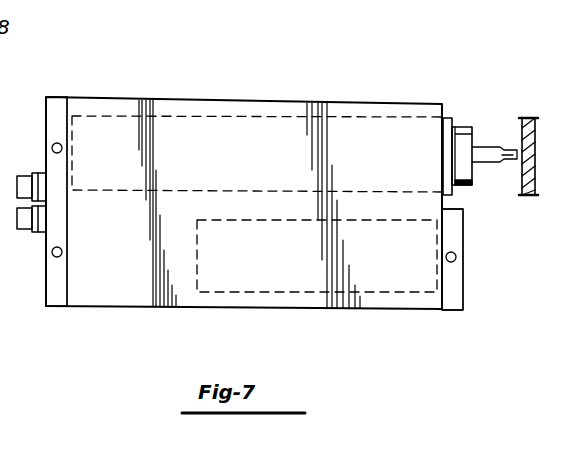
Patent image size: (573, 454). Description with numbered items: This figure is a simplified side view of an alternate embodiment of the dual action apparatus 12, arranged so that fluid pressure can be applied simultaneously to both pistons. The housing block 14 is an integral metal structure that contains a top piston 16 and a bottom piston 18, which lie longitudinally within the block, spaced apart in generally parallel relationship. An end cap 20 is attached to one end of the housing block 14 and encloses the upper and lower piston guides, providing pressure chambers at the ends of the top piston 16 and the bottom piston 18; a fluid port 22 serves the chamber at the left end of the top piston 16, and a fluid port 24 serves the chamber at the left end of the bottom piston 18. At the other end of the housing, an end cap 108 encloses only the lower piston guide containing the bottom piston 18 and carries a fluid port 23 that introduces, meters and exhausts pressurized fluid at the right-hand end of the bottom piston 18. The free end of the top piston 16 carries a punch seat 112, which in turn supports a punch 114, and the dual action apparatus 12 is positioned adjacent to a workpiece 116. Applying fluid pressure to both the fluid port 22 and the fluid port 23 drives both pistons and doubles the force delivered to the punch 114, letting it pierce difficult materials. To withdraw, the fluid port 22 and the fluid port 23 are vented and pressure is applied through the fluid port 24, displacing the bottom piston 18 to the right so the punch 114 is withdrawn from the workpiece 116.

The dual action apparatus 12 is at (266, 78).
The housing block 14 is at (118, 99).
The top piston 16 is at (192, 115).
The bottom piston 18 is at (234, 294).
The end cap 20 is at (60, 97).
The fluid port 22 is at (51, 145).
The fluid port 23 is at (456, 254).
The fluid port 24 is at (51, 256).
The end cap 108 is at (448, 312).
The punch seat 112 is at (463, 126).
The punch 114 is at (487, 165).
The workpiece 116 is at (522, 120).